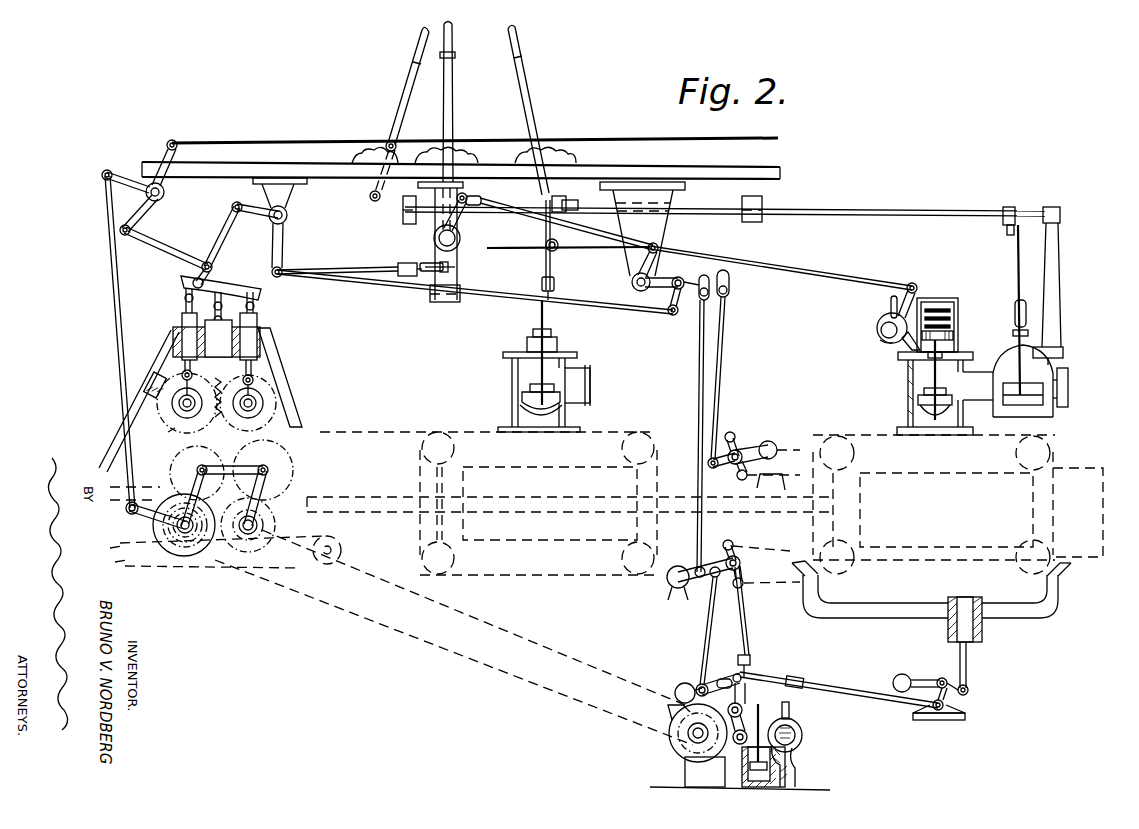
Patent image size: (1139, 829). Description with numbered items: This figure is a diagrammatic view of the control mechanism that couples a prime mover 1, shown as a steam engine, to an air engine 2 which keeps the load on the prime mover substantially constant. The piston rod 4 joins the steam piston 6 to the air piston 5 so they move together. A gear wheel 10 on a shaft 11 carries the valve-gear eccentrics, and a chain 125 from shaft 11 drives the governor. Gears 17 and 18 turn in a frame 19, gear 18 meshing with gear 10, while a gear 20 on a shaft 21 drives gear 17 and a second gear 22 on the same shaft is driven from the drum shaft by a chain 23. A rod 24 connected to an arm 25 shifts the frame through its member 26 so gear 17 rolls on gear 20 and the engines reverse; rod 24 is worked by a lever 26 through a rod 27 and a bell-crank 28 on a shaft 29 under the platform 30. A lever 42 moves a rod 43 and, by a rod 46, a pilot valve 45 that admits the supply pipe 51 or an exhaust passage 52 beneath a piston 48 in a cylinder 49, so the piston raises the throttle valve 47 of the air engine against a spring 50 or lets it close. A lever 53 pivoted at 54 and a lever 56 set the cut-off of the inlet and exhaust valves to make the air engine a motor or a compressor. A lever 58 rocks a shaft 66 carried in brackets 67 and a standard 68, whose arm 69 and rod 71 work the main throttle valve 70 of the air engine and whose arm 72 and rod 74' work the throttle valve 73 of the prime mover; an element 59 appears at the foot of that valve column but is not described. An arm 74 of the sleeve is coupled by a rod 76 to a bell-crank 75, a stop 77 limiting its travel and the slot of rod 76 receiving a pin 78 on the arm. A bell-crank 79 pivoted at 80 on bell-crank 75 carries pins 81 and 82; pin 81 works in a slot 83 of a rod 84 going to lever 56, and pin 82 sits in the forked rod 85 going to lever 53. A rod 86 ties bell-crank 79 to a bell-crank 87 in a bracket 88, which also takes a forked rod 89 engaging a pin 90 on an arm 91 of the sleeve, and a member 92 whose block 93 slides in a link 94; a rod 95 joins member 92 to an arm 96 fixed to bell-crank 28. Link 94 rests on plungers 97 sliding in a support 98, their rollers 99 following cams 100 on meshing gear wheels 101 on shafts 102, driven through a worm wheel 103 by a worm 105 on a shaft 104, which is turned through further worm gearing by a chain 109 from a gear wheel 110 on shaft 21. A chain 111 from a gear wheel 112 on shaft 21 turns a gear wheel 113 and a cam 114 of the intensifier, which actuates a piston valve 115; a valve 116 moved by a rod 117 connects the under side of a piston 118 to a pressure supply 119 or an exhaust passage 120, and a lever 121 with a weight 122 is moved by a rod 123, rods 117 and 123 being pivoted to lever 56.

The prime mover 1 is at (612, 430).
The air engine 2 is at (870, 433).
The piston rod 4 is at (414, 500).
The air piston 5 is at (858, 527).
The steam piston 6 is at (462, 490).
The gear wheel 10 is at (268, 550).
The shaft 11 is at (266, 520).
The gear 17 is at (172, 465).
The gear 18 is at (292, 467).
The frame 19 is at (226, 463).
The gear 20 is at (206, 510).
The shaft 21 is at (185, 540).
The second gear 22 is at (200, 546).
The chain 23 is at (126, 558).
The rod 24 is at (110, 264).
The arm 25 is at (135, 516).
The lever 26 is at (402, 87).
The rod 27 is at (285, 141).
The bell-crank 28 is at (127, 173).
The shaft 29 is at (165, 192).
The platform 30 is at (688, 168).
The lever 42 is at (532, 110).
The rod 43 is at (515, 249).
The pilot valve 45 is at (877, 331).
The rod 46 is at (806, 270).
The throttle valve 47 is at (910, 391).
The piston 48 is at (958, 336).
The cylinder 49 is at (935, 298).
The spring 50 is at (958, 306).
The steam or air supply pipe 51 is at (890, 300).
The exhaust passage 52 is at (885, 343).
The lever 53 is at (752, 446).
The pivot 54 is at (737, 468).
The lever 56 is at (726, 554).
The lever 58 is at (455, 100).
The valve rod bracket 59 is at (426, 293).
The shaft 66 is at (895, 218).
The brackets 67 is at (408, 219).
The standard 68 is at (1062, 255).
The arm 69 is at (1003, 222).
The main throttle valve 70 is at (1062, 388).
The rod 71 is at (1017, 260).
The arm 72 is at (565, 204).
The throttle valve 73 is at (513, 403).
The arm 74 is at (470, 219).
The rod 74' is at (562, 250).
The bell-crank 75 is at (632, 281).
The rod 76 is at (611, 241).
The stop 77 is at (464, 196).
The pin 78 is at (481, 200).
The bell-crank 79 is at (703, 275).
The pivot 80 is at (678, 281).
The pin 81 is at (700, 300).
The pin 82 is at (729, 290).
The slot 83 is at (711, 280).
The rod 84 is at (700, 368).
The rod 85 is at (724, 352).
The rod 86 is at (617, 305).
The bell-crank 87 is at (288, 223).
The bracket 88 is at (293, 191).
The rod 89 is at (372, 263).
The pin 90 is at (434, 262).
The arm 91 is at (455, 265).
The member 92 is at (221, 230).
The block 93 is at (211, 278).
The link 94 is at (264, 291).
The rod 95 is at (158, 250).
The arm 96 is at (143, 210).
The plungers 97 is at (184, 320).
The support 98 is at (283, 368).
The rollers 99 is at (181, 372).
The cams 100 is at (170, 401).
The gear wheels 101 is at (155, 417).
The shafts 102 is at (190, 409).
The worm wheel 103 is at (168, 432).
The shaft 104 is at (110, 456).
The worm 105 is at (150, 383).
The chain 109 is at (122, 543).
The gear wheel 110 is at (226, 545).
The chain 111 is at (440, 647).
The gear wheel 112 is at (170, 550).
The gear wheel 113 is at (688, 750).
The cam 114 is at (670, 723).
The piston valve 115 is at (950, 630).
The valve 116 is at (800, 734).
The rod 117 is at (737, 630).
The piston 118 is at (781, 770).
The pressure supply 119 is at (790, 706).
The exhaust passage 120 is at (796, 751).
The lever 121 is at (698, 686).
The weight 122 is at (676, 690).
The rod 123 is at (702, 630).
The chain 125 is at (322, 560).